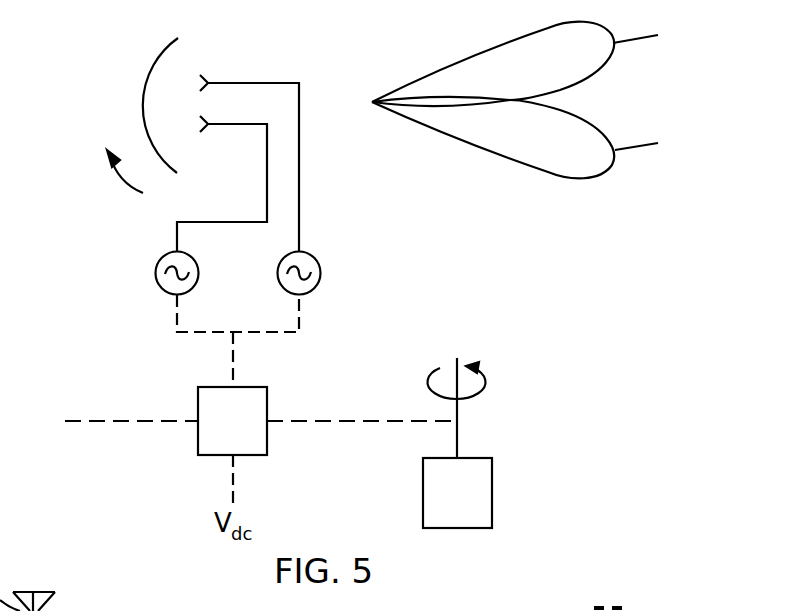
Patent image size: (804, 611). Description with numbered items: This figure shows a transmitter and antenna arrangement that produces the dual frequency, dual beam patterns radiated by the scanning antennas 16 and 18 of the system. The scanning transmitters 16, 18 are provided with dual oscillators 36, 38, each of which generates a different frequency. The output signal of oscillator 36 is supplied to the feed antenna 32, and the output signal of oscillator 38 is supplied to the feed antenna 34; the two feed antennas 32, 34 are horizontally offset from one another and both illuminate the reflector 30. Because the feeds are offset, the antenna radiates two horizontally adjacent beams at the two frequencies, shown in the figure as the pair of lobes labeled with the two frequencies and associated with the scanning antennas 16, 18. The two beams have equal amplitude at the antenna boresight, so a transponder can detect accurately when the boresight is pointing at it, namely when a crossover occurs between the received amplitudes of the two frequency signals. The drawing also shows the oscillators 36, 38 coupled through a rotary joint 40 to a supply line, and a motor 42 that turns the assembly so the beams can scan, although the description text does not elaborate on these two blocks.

The reflector 30 is at (142, 98).
The feed antenna 32 is at (250, 83).
The feed antenna 34 is at (245, 125).
The oscillator 36 is at (317, 256).
The oscillator 38 is at (160, 256).
The rotary joint 40 is at (197, 437).
The motor 42 is at (492, 483).
The scanning antenna 16 is at (493, 217).
The scanning antenna 18 is at (541, 217).